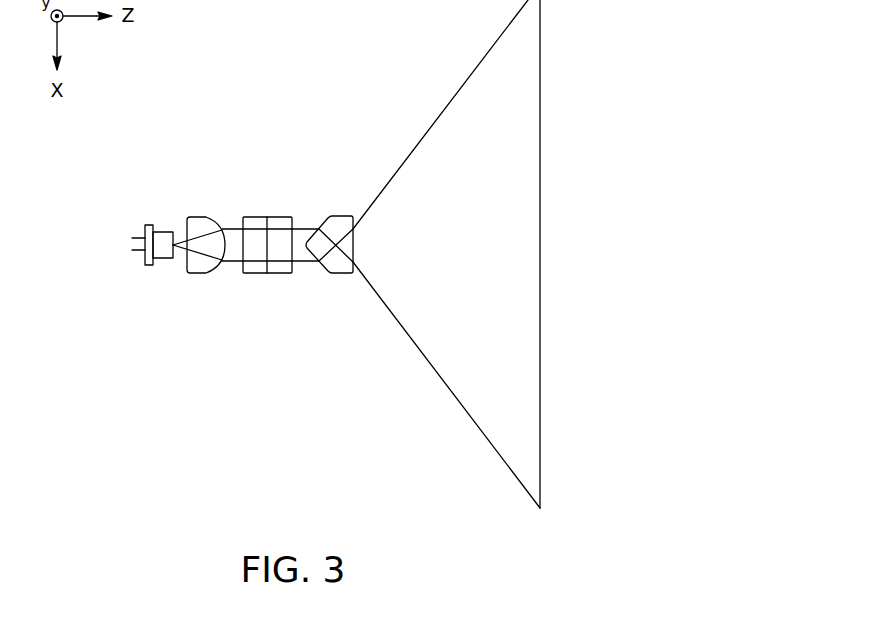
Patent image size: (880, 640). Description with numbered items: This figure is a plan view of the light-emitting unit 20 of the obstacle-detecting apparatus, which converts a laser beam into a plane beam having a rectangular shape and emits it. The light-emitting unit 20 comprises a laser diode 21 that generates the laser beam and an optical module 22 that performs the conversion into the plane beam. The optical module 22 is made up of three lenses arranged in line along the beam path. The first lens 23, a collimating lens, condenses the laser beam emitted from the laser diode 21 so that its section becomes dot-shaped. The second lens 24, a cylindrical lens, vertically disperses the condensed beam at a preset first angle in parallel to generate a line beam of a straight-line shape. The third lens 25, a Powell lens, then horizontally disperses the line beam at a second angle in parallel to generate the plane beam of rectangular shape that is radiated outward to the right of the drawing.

The light-emitting unit 20 is at (166, 92).
The laser diode 21 is at (158, 231).
The optical module 22 is at (253, 80).
The first lens 23 is at (208, 217).
The second lens 24 is at (267, 217).
The third lens 25 is at (337, 216).